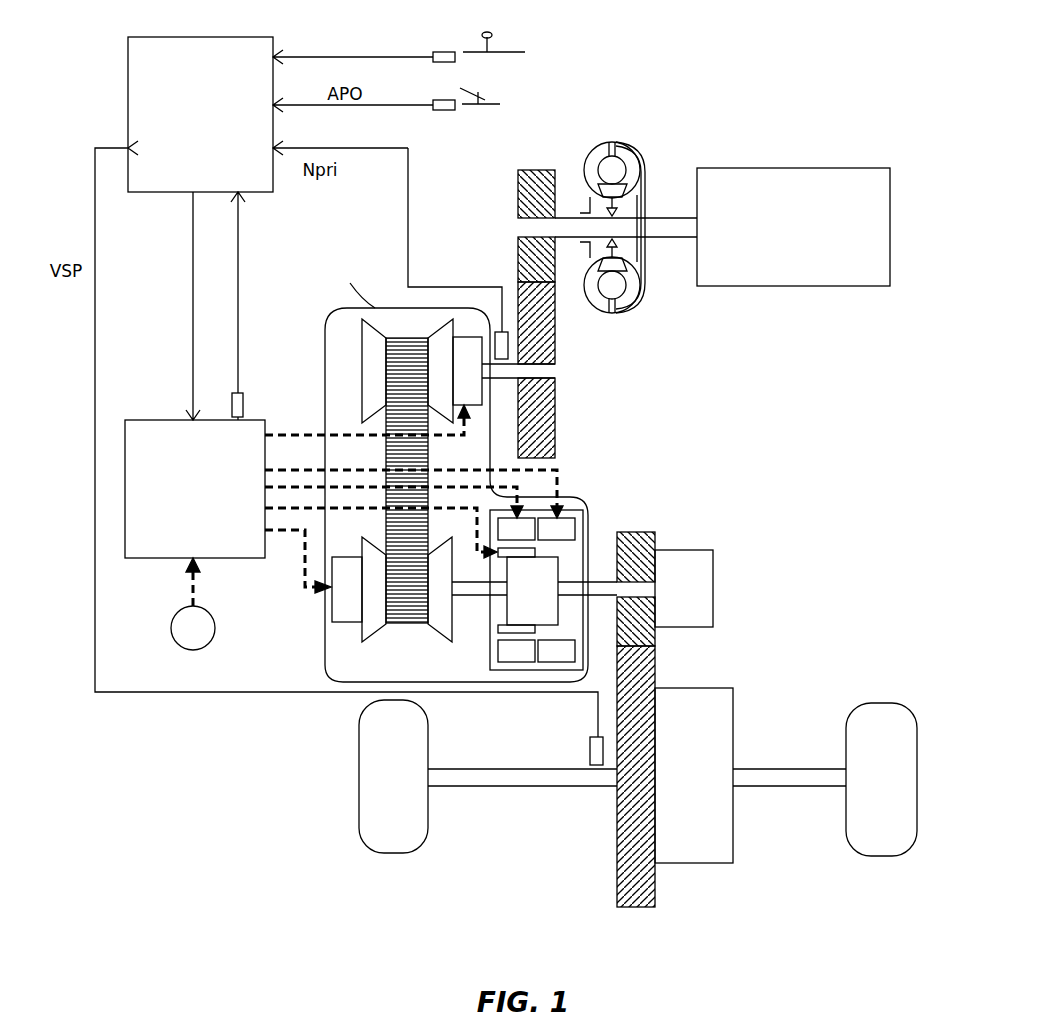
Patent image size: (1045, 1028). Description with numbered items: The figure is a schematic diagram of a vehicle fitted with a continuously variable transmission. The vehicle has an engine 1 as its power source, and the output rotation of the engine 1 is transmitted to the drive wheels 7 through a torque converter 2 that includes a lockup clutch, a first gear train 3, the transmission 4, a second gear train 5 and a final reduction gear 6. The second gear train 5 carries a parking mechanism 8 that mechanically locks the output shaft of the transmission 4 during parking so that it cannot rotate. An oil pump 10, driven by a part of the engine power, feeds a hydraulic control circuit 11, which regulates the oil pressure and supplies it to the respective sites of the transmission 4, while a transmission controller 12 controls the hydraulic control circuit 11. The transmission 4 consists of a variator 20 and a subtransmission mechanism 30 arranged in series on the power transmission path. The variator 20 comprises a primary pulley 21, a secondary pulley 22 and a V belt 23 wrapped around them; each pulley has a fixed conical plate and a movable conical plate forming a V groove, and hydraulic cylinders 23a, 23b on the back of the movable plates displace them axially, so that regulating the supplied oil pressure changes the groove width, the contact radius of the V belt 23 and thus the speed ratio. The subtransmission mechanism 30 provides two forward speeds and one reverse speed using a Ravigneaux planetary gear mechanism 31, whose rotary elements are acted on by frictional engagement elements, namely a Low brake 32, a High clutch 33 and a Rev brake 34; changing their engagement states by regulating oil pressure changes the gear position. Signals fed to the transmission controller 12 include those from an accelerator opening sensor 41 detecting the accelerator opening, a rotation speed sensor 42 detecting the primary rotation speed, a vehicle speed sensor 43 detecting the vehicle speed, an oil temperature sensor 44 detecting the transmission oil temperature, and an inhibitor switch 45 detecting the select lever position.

The engine 1 is at (880, 180).
The torque converter 2 is at (642, 172).
The first gear train 3 is at (549, 163).
The transmission 4 is at (355, 284).
The second gear train 5 is at (645, 919).
The final reduction gear 6 is at (693, 850).
The drive wheels 7 is at (395, 838).
The parking mechanism 8 is at (695, 580).
The oil pump 10 is at (175, 616).
The hydraulic control circuit 11 is at (147, 424).
The transmission controller 12 is at (260, 50).
The variator 20 is at (346, 334).
The primary pulley 21 is at (378, 368).
The secondary pulley 22 is at (375, 605).
The V belt 23 is at (410, 338).
The hydraulic cylinder 23a is at (465, 352).
The hydraulic cylinder 23b is at (342, 603).
The subtransmission mechanism 30 is at (545, 590).
The Ravigneaux planetary gear mechanism 31 is at (590, 548).
The Low brake 32 is at (522, 535).
The High clutch 33 is at (515, 629).
The Rev brake 34 is at (560, 530).
The accelerator opening sensor 41 is at (441, 110).
The rotation speed sensor 42 is at (502, 345).
The vehicle speed sensor 43 is at (590, 750).
The oil temperature sensor 44 is at (243, 400).
The inhibitor switch 45 is at (441, 52).